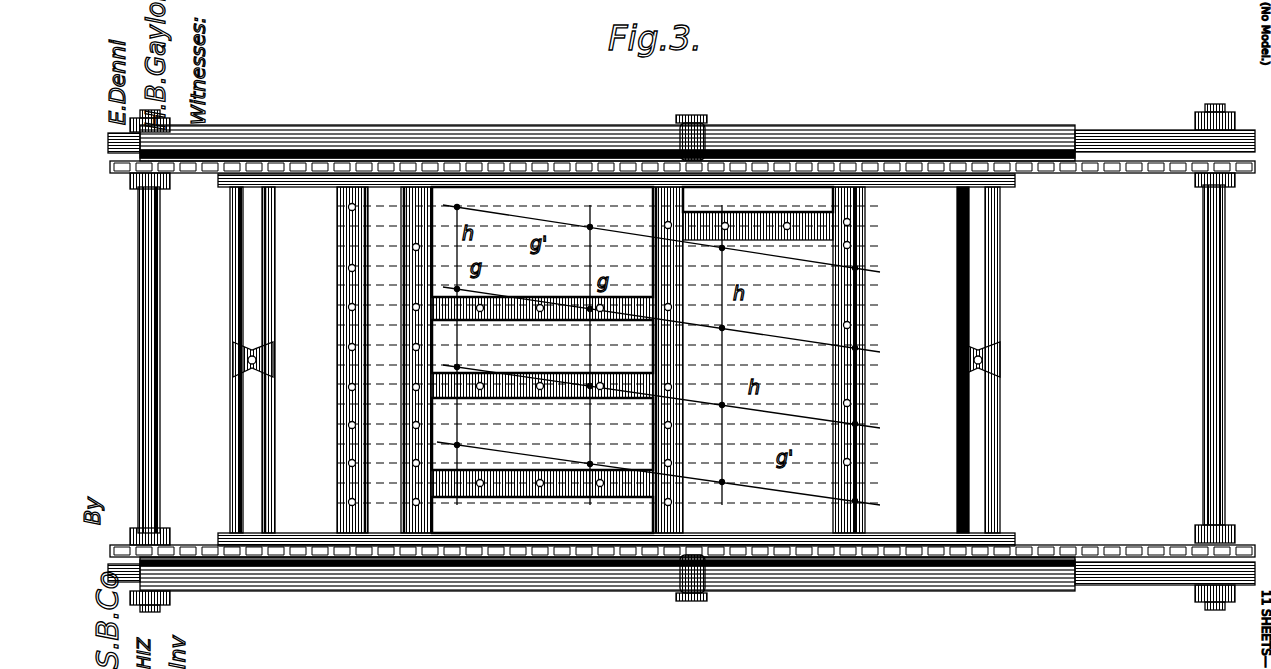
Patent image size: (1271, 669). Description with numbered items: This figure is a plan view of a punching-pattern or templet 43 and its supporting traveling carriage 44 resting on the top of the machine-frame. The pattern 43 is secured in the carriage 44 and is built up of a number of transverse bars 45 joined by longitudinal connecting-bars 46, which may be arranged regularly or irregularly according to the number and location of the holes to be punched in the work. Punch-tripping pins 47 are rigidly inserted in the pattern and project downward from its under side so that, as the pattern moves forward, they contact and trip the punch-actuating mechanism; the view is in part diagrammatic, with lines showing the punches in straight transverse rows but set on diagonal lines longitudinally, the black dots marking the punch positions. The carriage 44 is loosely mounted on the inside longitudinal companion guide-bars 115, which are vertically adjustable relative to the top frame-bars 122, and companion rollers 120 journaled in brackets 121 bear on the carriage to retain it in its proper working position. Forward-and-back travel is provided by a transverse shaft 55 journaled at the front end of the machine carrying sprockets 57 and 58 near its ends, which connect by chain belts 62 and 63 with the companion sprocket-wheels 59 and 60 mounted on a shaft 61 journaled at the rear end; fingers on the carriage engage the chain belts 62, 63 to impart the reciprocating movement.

The punching-pattern or templet 43 is at (420, 355).
The traveling carriage 44 is at (238, 270).
The transverse bars 45 is at (345, 446).
The longitudinal connecting-bars 46 is at (757, 222).
The punch-tripping pins 47 is at (847, 247).
The transverse shaft 55 is at (1205, 328).
The sprocket 57 is at (1197, 530).
The sprocket 58 is at (1197, 190).
The companion sprocket-wheel 59 is at (165, 540).
The companion sprocket-wheel 60 is at (137, 193).
The shaft 61 is at (140, 325).
The chain belt 62 is at (290, 545).
The chain belt 63 is at (528, 172).
The inside longitudinal companion guide-bars 115 is at (112, 158).
The companion rollers 120 is at (705, 132).
The brackets 121 is at (684, 116).
The top frame-bars 122 is at (1132, 148).